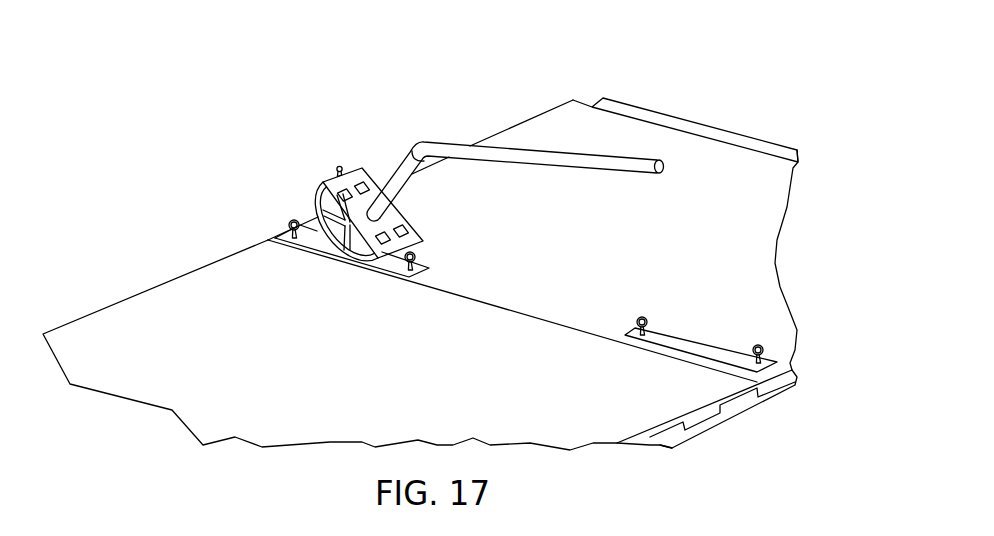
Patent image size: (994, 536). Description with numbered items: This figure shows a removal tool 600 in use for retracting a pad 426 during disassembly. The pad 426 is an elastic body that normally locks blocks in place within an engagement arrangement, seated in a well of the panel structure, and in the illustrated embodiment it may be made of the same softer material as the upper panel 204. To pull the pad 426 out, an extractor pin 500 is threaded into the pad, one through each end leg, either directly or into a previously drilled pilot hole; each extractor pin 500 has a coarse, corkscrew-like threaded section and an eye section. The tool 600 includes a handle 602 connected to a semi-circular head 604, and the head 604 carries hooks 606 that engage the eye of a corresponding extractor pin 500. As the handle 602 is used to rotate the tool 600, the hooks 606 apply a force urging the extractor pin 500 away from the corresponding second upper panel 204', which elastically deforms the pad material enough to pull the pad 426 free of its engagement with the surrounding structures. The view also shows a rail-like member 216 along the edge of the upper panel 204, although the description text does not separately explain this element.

The upper panel 204 is at (400, 275).
The second upper panel 204' is at (685, 205).
The rail 216 is at (774, 408).
The pad 426 is at (703, 347).
The extractor pin 500 is at (290, 220).
The tool 600 is at (436, 142).
The handle 602 is at (470, 145).
The semi-circular head 604 is at (322, 190).
The hooks 606 is at (333, 172).